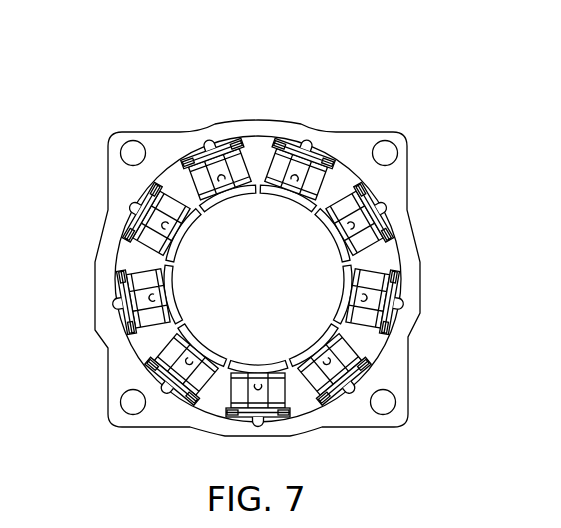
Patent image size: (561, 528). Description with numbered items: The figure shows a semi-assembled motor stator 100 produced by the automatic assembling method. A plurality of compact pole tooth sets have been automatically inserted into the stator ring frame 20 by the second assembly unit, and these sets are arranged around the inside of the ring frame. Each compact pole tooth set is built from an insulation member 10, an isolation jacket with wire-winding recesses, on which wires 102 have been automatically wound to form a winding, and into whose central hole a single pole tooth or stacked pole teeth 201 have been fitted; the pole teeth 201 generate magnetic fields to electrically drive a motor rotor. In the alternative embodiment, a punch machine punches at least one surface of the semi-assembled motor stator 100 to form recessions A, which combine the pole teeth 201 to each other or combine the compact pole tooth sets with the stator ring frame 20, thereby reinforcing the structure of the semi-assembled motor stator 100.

The semi-assembled motor stator 100 is at (272, 223).
The stator ring frame 20 is at (404, 140).
The insulation member 10 is at (336, 152).
The wires 102 is at (246, 161).
The pole teeth 201 is at (391, 204).
The recessions A is at (392, 301).